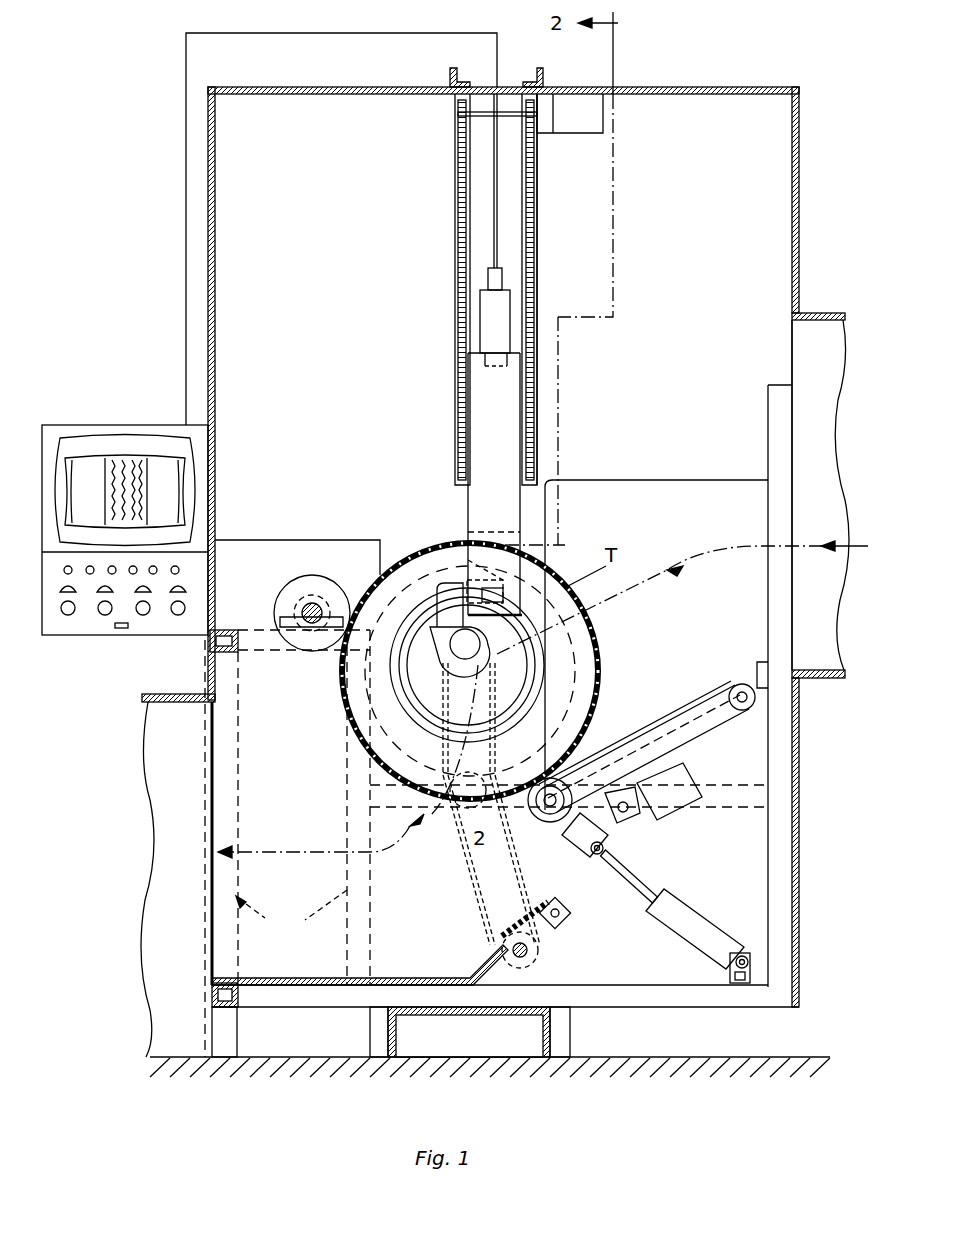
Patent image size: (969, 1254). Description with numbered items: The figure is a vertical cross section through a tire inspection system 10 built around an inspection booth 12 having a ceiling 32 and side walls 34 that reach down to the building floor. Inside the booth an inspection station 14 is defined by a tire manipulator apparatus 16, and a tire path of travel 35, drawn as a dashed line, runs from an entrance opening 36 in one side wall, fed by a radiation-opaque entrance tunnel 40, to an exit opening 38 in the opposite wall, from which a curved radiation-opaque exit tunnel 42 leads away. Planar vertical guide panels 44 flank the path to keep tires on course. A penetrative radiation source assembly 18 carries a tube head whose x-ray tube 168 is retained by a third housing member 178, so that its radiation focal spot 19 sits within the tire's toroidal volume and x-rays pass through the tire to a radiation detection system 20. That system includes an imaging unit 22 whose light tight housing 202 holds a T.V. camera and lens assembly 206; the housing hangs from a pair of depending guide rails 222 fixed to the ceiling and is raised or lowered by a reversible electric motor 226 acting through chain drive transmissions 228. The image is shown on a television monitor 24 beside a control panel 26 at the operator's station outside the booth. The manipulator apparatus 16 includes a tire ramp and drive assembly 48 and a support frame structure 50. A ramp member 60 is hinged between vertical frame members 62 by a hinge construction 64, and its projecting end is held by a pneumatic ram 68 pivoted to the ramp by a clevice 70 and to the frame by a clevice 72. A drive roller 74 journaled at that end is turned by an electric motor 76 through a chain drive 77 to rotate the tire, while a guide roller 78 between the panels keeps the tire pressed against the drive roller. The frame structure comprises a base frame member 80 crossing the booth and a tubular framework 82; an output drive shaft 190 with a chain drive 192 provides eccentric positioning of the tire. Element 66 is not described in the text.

The tire inspection system 10 is at (156, 163).
The inspection booth 12 is at (208, 326).
The inspection station 14 is at (430, 546).
The tire manipulator apparatus 16 is at (548, 663).
The penetrative radiation source assembly 18 is at (437, 611).
The radiation focal spot 19 is at (550, 556).
The radiation detection system 20 is at (537, 451).
The imaging unit 22 is at (468, 456).
The television monitor 24 is at (43, 448).
The control panel 26 is at (42, 612).
The ceiling 32 is at (368, 95).
The side walls 34 is at (215, 218).
The tire path of travel 35 is at (605, 598).
The entrance opening 36 is at (790, 600).
The exit opening 38 is at (215, 770).
The entrance tunnel 40 is at (825, 638).
The exit tunnel 42 is at (170, 800).
The guide panels 44 is at (660, 496).
The tire ramp and drive assembly 48 is at (692, 749).
The support frame structure 50 is at (574, 1028).
The ramp member 60 is at (640, 745).
The vertical frame members 62 is at (768, 634).
The hinge construction 64 is at (738, 712).
The link 66 is at (560, 790).
The ram 68 is at (682, 905).
The clevice 70 is at (590, 851).
The clevice 72 is at (730, 968).
The drive roller 74 is at (556, 824).
The electric motor 76 is at (672, 805).
The chain drive 77 is at (610, 828).
The guide roller 78 is at (310, 594).
The base frame member 80 is at (395, 1042).
The framework 82 is at (290, 1000).
The x-ray tube 168 is at (447, 586).
The third housing member 178 is at (505, 600).
The output drive shaft 190 is at (540, 956).
The chain drive 192 is at (455, 890).
The light tight housing 202 is at (497, 430).
The T.V. camera and lens assembly 206 is at (490, 300).
The guide rails 222 is at (458, 172).
The reversible electric motor 226 is at (597, 124).
The chain drive transmissions 228 is at (462, 207).